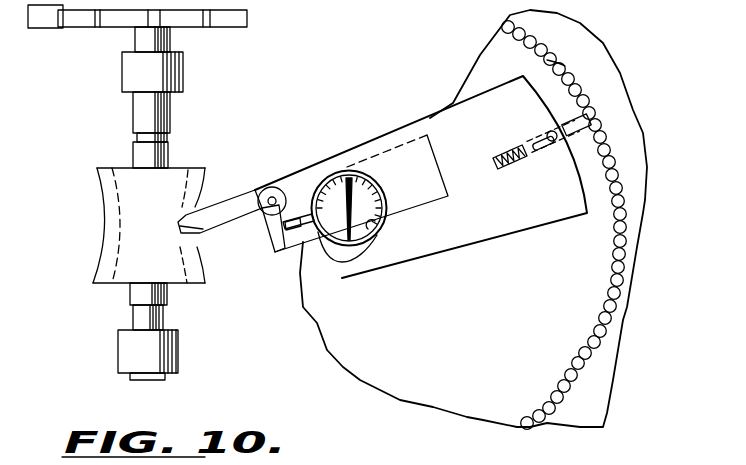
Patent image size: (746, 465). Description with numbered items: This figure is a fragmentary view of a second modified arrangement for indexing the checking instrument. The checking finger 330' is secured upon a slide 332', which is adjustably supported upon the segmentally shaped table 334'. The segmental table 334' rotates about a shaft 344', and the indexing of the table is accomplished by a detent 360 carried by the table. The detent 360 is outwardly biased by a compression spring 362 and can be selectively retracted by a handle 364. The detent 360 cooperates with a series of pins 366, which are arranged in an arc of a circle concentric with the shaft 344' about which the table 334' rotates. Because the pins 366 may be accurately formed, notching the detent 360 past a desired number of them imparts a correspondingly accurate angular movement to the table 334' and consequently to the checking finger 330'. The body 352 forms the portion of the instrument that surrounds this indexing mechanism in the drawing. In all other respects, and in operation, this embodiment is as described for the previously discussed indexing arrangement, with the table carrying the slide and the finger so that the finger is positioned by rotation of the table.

The checking finger 330' is at (236, 190).
The slide 332' is at (380, 193).
The segmental table 334' is at (421, 177).
The shaft 344' is at (363, 241).
The wheel body 352 is at (582, 20).
The detent 360 is at (591, 117).
The compression spring 362 is at (509, 165).
The handle 364 is at (550, 133).
The pins 366 is at (560, 63).